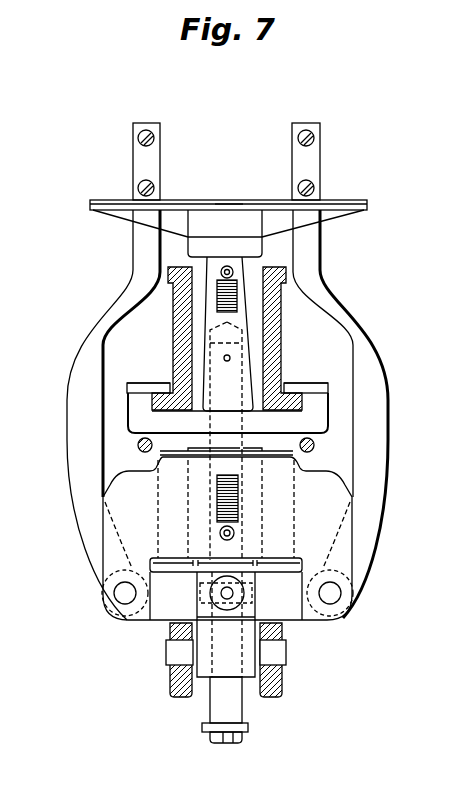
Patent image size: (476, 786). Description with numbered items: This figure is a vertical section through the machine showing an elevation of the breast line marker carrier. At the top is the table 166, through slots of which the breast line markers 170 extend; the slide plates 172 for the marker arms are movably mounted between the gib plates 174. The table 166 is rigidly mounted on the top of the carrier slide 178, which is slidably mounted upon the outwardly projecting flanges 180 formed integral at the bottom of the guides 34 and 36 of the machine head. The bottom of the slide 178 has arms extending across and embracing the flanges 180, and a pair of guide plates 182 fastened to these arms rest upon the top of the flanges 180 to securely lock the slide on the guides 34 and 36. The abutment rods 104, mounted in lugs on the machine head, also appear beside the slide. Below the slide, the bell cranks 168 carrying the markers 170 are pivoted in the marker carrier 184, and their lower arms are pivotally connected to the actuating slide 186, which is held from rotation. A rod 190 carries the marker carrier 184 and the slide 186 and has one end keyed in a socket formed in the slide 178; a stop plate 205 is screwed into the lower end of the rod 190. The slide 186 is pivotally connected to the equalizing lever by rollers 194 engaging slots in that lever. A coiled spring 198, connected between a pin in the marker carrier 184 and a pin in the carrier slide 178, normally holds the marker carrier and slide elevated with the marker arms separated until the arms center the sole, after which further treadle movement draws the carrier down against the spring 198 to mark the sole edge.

The breast line markers 170 is at (133, 157).
The gib plates 174 is at (113, 200).
The slide plates 172 is at (230, 200).
The table 166 is at (157, 218).
The bell cranks 168 is at (78, 397).
The coiled spring 198 is at (237, 292).
The guide 34 is at (168, 332).
The guide 36 is at (286, 345).
The flanges 180 is at (167, 386).
The guide plates 182 is at (137, 387).
The carrier slide 178 is at (138, 417).
The abutment rods 104 is at (148, 452).
The marker carrier 184 is at (108, 538).
The actuating slide 186 is at (222, 667).
The rollers 194 is at (182, 653).
The rod 190 is at (217, 702).
The stop plates 205 is at (250, 728).